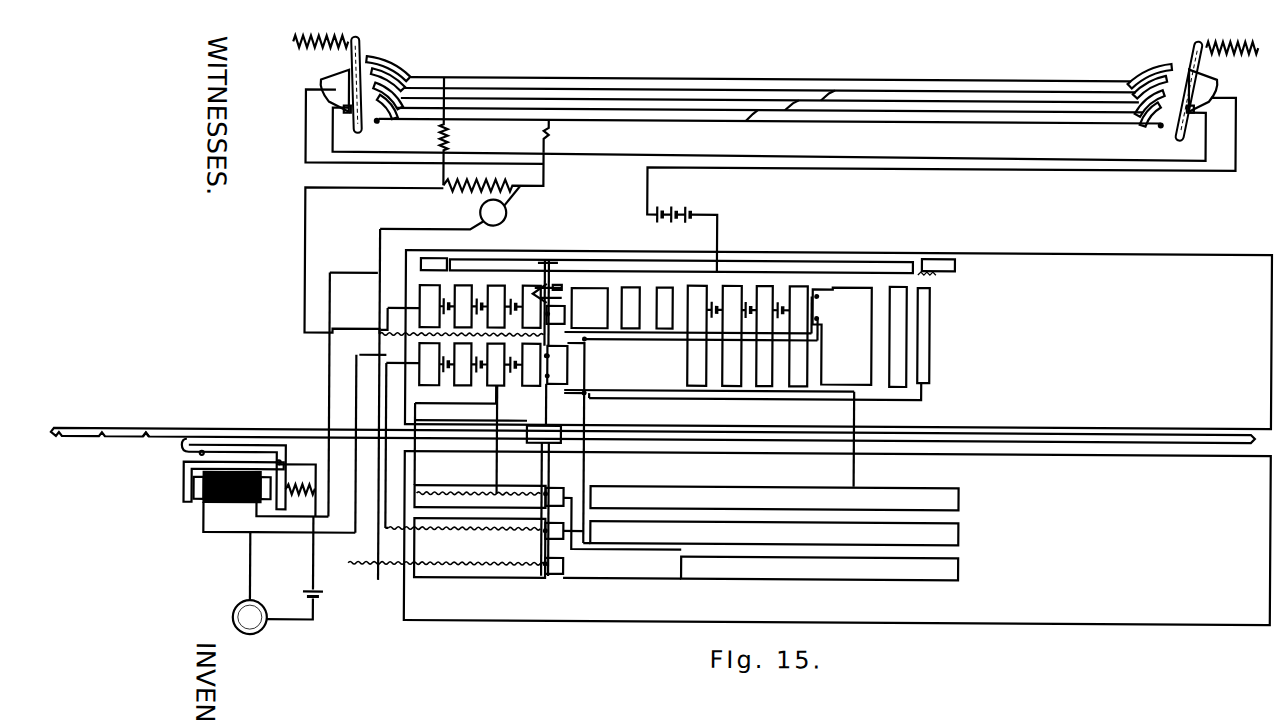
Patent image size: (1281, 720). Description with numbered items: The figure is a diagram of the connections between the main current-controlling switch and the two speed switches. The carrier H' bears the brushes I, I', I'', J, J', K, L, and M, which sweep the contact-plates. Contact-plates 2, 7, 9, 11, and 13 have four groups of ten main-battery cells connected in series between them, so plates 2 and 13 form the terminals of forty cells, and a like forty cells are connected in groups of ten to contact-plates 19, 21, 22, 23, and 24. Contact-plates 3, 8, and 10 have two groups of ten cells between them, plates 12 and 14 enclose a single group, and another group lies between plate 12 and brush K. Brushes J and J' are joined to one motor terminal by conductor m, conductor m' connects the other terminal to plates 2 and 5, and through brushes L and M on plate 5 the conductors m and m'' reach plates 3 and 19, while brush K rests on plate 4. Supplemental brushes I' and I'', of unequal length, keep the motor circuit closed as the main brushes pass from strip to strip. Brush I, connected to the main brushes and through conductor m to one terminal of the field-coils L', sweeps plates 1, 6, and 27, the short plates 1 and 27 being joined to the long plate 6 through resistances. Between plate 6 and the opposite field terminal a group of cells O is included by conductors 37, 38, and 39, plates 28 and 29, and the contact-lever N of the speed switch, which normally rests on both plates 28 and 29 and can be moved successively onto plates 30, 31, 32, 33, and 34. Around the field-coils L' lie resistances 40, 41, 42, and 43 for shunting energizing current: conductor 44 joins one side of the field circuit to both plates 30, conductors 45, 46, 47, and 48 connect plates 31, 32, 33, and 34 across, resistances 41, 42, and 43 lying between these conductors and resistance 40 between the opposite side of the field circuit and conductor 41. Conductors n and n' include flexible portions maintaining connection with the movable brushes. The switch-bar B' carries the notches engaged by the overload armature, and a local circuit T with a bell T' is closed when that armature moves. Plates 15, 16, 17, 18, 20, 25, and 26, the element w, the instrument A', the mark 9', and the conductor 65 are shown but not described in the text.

The plate 1 is at (434, 265).
The contact-plate 2 is at (430, 306).
The contact-plate 3 is at (412, 364).
The plate 4 is at (479, 496).
The plate 5 is at (466, 548).
The plate 6 is at (681, 267).
The contact-plate 7 is at (456, 306).
The contact-plate 8 is at (455, 364).
The contact-plate 9 is at (488, 306).
The contact-plate 10 is at (488, 364).
The contact-plate 11 is at (523, 307).
The plate 12 is at (522, 365).
The contact-plate 13 is at (590, 308).
The plate 14 is at (585, 357).
The relay 15 is at (631, 307).
The resistance 16 is at (774, 498).
The resistance 17 is at (770, 533).
The relay 18 is at (666, 308).
The contact-plate 19 is at (697, 336).
The resistance 20 is at (819, 569).
The contact-plate 21 is at (724, 336).
The contact-plate 22 is at (757, 336).
The contact-plate 23 is at (898, 337).
The contact-plate 24 is at (842, 335).
The relay 25 is at (790, 336).
The relay 26 is at (930, 327).
The plate 27 is at (936, 266).
The plate 28 is at (1220, 82).
The plate 29 is at (781, 120).
The plate 30 is at (769, 70).
The plate 31 is at (769, 83).
The plate 32 is at (769, 100).
The plate 33 is at (769, 111).
The plate 34 is at (773, 130).
The conductor 37 is at (770, 168).
The conductor 38 is at (769, 135).
The conductor 39 is at (380, 168).
The resistance 40 is at (554, 136).
The resistance 41 is at (750, 126).
The resistance 42 is at (795, 108).
The resistance 43 is at (830, 88).
The conductor 44 is at (770, 129).
The conductor 45 is at (980, 88).
The conductor 46 is at (984, 98).
The conductor 47 is at (1020, 108).
The conductor 48 is at (770, 129).
The conductor 65 is at (354, 444).
The spring w is at (775, 51).
The contact-lever N is at (358, 56).
The field-coils L' is at (493, 172).
The ammeter A' is at (450, 207).
The group of cells O is at (687, 229).
The conductor m is at (424, 261).
The conductor m' is at (437, 405).
The conductor m'' is at (320, 394).
The brush I is at (838, 431).
The supplemental brush I' is at (380, 403).
The supplemental brush I'' is at (380, 401).
The brush J is at (555, 315).
The brush J' is at (556, 365).
The carrier H' is at (538, 480).
The switch-bar B' is at (653, 444).
The notch 9' is at (146, 418).
The conductor n is at (391, 445).
The conductor n' is at (425, 444).
The brush K is at (612, 519).
The brush L is at (563, 531).
The brush M is at (612, 568).
The local circuit T is at (279, 542).
The bell T' is at (250, 617).